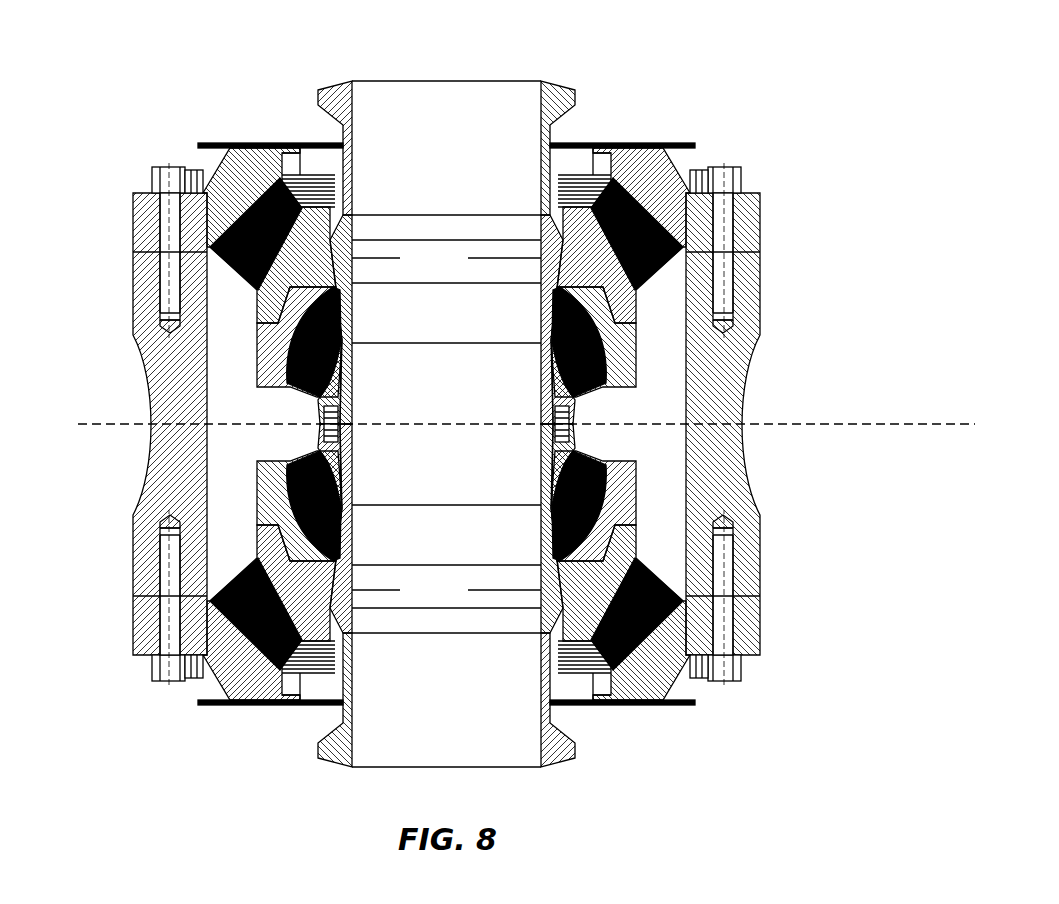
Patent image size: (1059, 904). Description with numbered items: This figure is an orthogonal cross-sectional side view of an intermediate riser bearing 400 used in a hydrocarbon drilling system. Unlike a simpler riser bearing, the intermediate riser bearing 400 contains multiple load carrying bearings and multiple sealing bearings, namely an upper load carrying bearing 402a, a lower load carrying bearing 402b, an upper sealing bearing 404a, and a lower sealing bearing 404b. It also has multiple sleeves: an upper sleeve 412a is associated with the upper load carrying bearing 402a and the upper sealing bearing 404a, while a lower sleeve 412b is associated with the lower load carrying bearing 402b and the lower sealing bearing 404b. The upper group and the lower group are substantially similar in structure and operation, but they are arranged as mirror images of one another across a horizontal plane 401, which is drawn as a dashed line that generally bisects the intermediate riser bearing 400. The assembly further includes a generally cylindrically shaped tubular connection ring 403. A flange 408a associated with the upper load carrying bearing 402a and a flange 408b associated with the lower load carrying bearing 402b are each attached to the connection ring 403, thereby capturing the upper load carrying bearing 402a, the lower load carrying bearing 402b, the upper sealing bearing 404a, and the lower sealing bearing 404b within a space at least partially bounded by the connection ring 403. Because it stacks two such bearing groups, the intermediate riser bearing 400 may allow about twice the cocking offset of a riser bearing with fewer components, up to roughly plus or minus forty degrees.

The intermediate riser bearing 400 is at (516, 388).
The horizontal plane 401 is at (125, 413).
The upper load carrying bearing 402a is at (658, 279).
The lower load carrying bearing 402b is at (662, 575).
The connection ring 403 is at (722, 483).
The upper sealing bearing 404a is at (606, 396).
The lower sealing bearing 404b is at (616, 456).
The flange 408a is at (632, 160).
The flange 408b is at (648, 703).
The upper sleeve 412a is at (354, 312).
The lower sleeve 412b is at (354, 527).